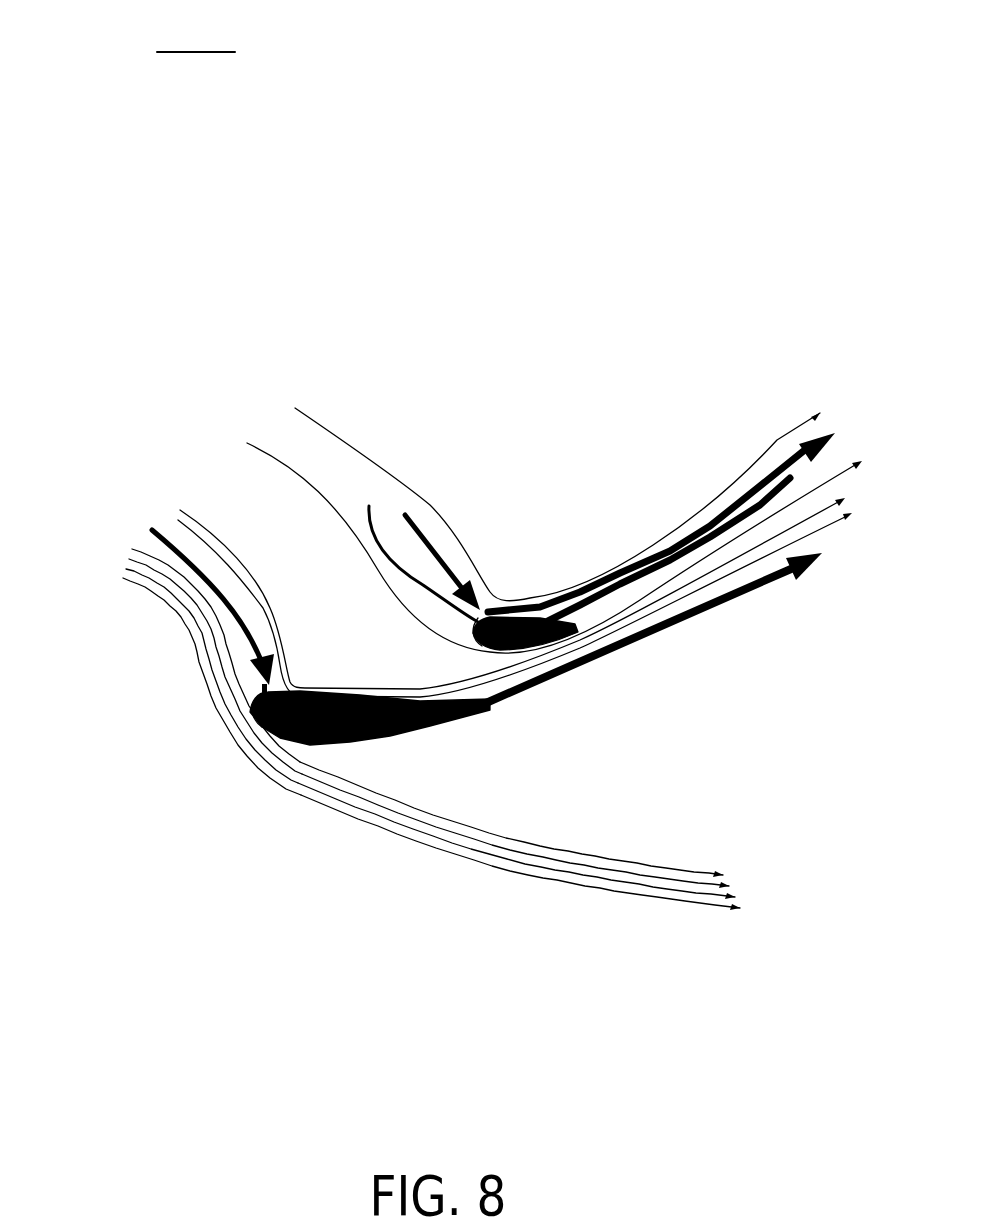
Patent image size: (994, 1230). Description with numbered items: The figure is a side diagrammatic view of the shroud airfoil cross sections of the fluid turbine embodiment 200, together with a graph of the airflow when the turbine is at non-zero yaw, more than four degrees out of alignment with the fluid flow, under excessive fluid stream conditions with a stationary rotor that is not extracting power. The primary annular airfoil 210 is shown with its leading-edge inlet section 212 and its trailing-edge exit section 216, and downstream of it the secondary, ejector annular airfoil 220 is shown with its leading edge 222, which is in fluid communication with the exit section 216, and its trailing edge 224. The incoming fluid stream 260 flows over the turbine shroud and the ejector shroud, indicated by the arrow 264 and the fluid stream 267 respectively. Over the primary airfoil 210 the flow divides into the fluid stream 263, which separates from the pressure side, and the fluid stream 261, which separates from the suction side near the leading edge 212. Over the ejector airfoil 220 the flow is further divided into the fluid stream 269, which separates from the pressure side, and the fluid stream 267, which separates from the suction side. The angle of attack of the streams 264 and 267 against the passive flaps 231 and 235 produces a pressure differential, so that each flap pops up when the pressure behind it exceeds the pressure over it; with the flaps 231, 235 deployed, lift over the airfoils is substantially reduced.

The embodiment 200 is at (194, 27).
The primary annular airfoil 210 is at (330, 745).
The leading-edge inlet section 212 is at (255, 710).
The trailing-edge exit section 216 is at (521, 700).
The secondary annular airfoil 220 is at (513, 612).
The leading edge 222 is at (451, 638).
The trailing edge 224 is at (818, 469).
The flap 231 is at (262, 690).
The flap 235 is at (410, 551).
The fluid stream 260 is at (111, 616).
The fluid stream 261 is at (360, 850).
The fluid stream 263 is at (197, 502).
The arrow 264 is at (163, 530).
The fluid stream 267 is at (276, 440).
The fluid stream 269 is at (333, 408).